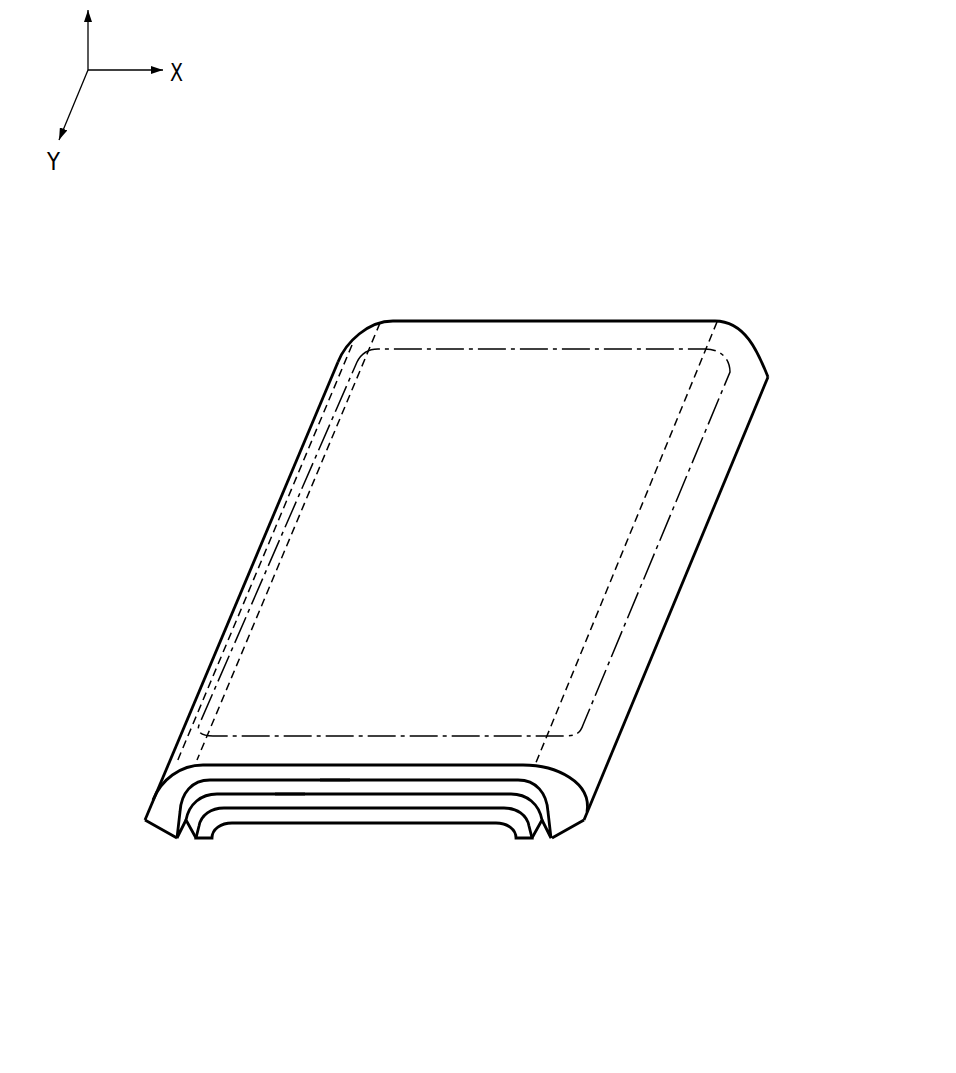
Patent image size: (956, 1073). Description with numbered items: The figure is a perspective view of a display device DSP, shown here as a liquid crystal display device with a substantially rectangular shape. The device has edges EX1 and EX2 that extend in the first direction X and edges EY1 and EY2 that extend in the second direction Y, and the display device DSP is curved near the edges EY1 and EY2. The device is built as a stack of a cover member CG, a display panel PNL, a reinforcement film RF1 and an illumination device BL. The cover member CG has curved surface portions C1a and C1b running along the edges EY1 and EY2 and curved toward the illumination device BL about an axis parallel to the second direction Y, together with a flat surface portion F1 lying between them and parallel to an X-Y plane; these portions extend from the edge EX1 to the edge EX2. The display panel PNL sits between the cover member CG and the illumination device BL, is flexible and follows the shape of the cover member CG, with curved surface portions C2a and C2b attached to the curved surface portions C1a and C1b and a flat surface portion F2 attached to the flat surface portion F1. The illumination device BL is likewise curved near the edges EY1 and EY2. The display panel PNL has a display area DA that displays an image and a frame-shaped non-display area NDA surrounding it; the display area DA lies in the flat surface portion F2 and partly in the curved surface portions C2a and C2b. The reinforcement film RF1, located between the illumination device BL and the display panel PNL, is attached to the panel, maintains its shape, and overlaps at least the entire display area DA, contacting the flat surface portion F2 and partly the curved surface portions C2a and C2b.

The display device DSP is at (195, 290).
The edge EX1 is at (278, 758).
The edge EX2 is at (445, 316).
The edge EY1 is at (313, 413).
The edge EY2 is at (733, 482).
The display area DA is at (628, 573).
The non-display area NDA is at (655, 618).
The curved surface portion C1a is at (174, 777).
The curved surface portion C1b is at (570, 785).
The curved surface portion C2a is at (163, 818).
The curved surface portion C2b is at (569, 811).
The cover member CG is at (487, 773).
The display panel PNL is at (460, 790).
The reinforcement film RF1 is at (417, 800).
The illumination device BL is at (368, 820).
The flat surface portion F1 is at (335, 777).
The flat surface portion F2 is at (288, 791).